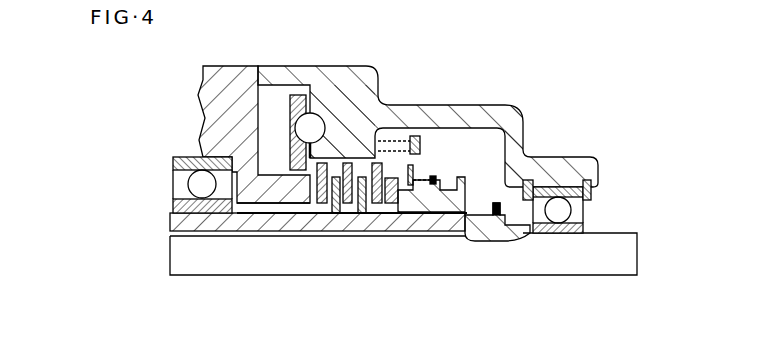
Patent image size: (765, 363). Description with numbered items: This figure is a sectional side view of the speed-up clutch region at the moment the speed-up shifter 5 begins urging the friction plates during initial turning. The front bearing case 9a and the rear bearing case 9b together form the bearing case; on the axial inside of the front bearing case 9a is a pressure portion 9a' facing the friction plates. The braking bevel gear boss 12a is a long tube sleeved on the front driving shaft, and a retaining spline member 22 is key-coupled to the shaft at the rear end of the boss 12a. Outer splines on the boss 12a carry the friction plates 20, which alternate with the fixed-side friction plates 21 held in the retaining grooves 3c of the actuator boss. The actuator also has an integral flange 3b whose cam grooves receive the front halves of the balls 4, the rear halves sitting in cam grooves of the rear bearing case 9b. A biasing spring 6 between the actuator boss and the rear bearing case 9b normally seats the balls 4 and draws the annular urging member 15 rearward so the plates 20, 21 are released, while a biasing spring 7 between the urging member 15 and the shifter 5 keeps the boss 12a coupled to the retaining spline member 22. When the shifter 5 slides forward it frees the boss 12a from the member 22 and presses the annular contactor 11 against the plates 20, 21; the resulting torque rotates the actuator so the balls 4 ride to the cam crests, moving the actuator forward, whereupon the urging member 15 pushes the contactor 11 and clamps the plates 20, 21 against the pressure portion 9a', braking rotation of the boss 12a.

The front bearing case 9a is at (254, 117).
The rear bearing case 9b is at (333, 66).
The pressure portion 9a' is at (352, 249).
The flange 3b is at (290, 131).
The retaining grooves 3c is at (437, 160).
The balls 4 is at (326, 119).
The biasing spring 6 is at (402, 140).
The biasing spring 7 is at (424, 185).
The speed-up shifter 5 is at (462, 178).
The annular contactor 11 is at (392, 215).
The braking bevel gear boss 12a is at (238, 226).
The urging member 15 is at (398, 205).
The friction plates 20 is at (350, 208).
The friction plates 21 is at (323, 208).
The retaining spline member 22 is at (487, 215).